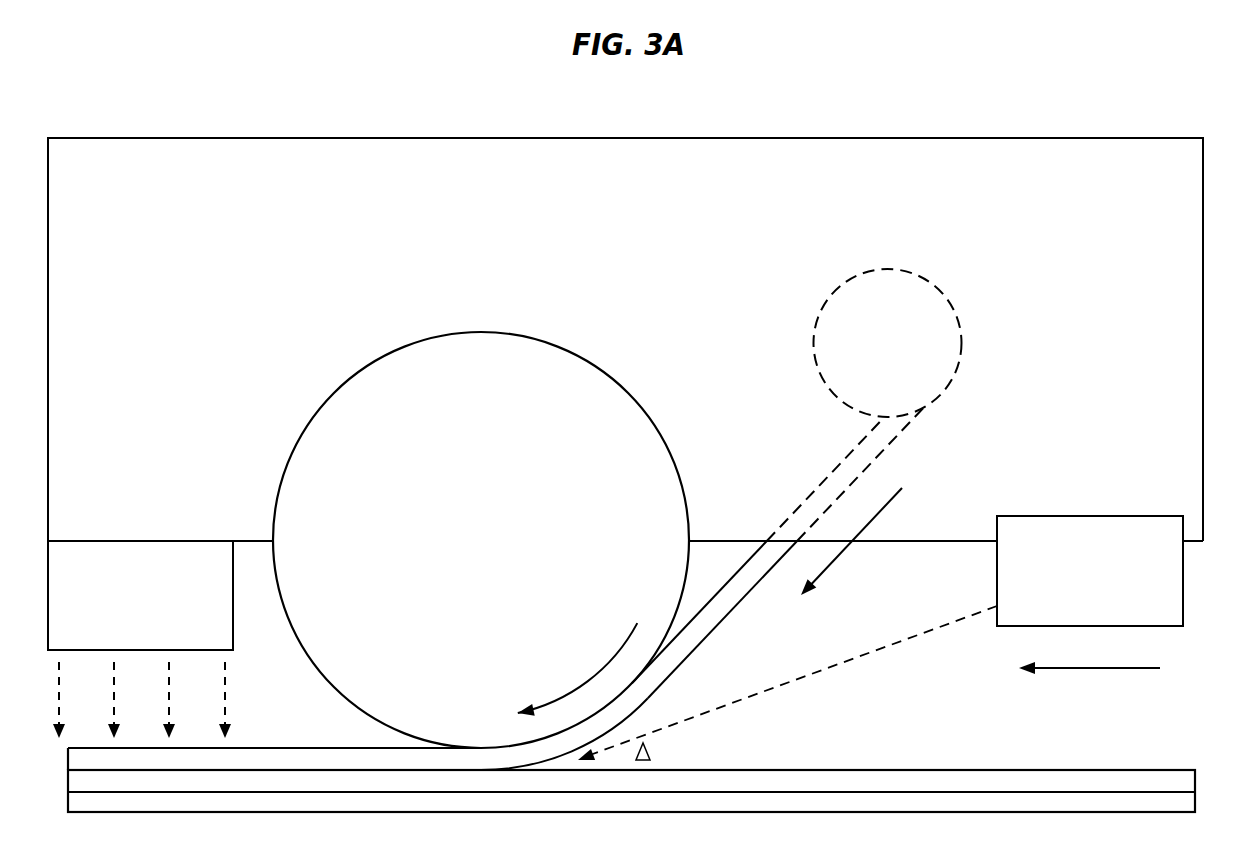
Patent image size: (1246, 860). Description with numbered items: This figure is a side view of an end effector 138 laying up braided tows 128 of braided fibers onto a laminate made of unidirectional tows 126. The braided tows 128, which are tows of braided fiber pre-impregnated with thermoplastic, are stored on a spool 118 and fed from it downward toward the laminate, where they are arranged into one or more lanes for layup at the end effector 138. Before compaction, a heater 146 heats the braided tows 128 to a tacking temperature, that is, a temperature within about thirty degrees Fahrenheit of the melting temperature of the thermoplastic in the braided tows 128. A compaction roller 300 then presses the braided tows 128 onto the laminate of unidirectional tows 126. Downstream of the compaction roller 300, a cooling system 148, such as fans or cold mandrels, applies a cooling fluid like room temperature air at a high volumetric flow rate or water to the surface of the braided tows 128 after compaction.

The end effector 138 is at (189, 216).
The cooling system 148 is at (159, 636).
The compaction roller 300 is at (553, 344).
The spool 118 is at (954, 306).
The braided tows 128 is at (841, 463).
The heater 146 is at (1109, 600).
The unidirectional tows 126 is at (900, 769).